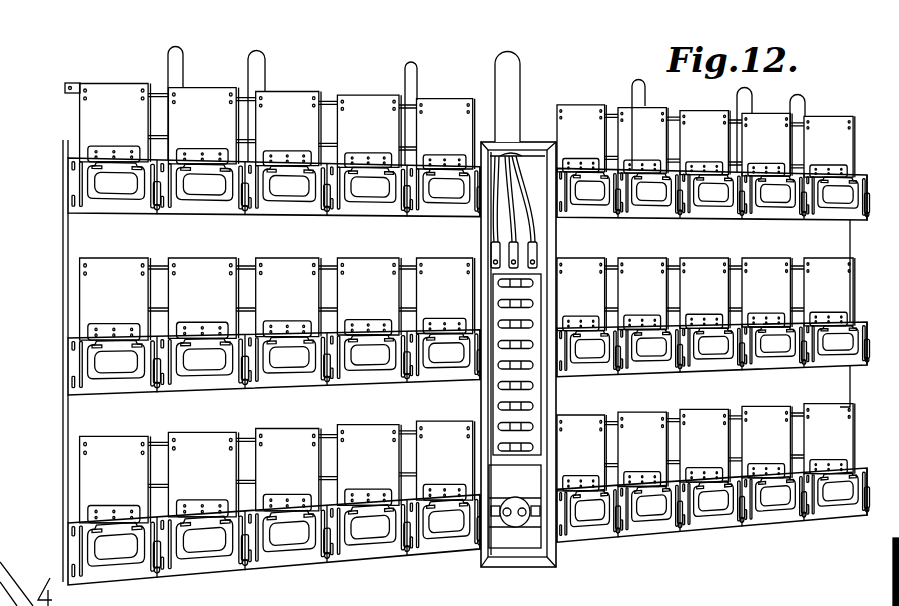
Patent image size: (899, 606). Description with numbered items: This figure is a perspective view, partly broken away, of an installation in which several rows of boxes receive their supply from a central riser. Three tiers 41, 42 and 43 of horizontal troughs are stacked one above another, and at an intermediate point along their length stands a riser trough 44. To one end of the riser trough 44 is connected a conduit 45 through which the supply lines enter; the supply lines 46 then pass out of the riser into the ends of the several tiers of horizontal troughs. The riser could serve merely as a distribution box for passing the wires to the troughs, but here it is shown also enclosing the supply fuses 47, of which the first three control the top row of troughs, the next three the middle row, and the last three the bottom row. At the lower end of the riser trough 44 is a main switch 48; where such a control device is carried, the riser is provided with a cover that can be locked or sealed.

The tier 41 is at (72, 182).
The tier 42 is at (73, 361).
The tier 43 is at (70, 551).
The riser trough 44 is at (500, 146).
The conduit 45 is at (497, 62).
The supply lines 46 is at (497, 163).
The supply fuses 47 is at (520, 283).
The main switch 48 is at (518, 527).